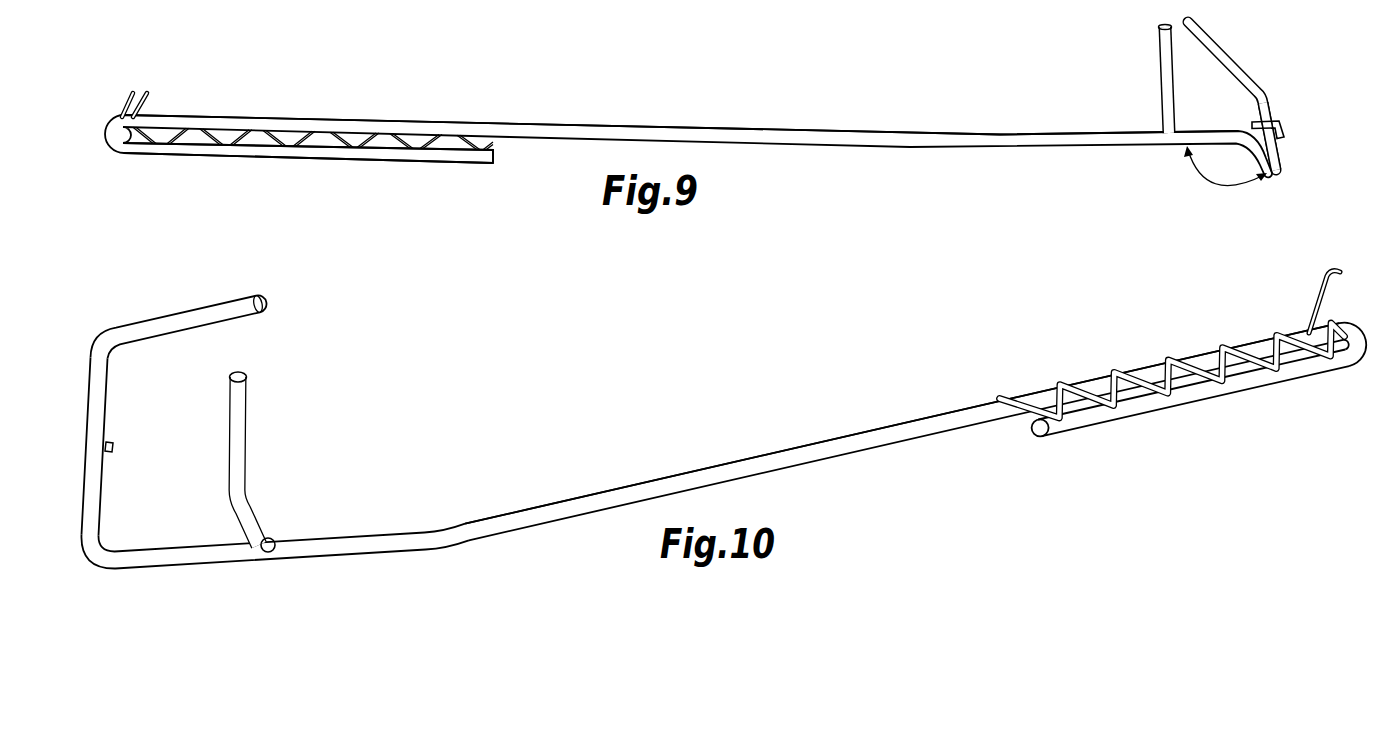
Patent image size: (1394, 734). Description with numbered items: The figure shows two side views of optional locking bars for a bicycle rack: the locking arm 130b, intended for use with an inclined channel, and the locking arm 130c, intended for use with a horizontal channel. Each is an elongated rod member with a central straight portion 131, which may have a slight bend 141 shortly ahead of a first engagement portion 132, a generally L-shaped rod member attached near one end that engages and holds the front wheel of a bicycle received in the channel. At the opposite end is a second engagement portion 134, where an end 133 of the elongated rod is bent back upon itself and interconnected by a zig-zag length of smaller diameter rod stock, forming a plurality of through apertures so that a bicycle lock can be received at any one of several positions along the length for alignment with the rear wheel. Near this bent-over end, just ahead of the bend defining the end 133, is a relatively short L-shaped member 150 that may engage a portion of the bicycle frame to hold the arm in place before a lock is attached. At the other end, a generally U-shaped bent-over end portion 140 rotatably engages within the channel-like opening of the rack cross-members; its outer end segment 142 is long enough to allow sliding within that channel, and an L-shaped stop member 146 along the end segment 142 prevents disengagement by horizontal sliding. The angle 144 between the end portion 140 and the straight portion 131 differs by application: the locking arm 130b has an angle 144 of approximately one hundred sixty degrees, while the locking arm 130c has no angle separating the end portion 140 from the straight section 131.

In FIG. 9, the locking arm 130b is at (762, 122).
In FIG. 10, the locking arm 130c is at (778, 448).
In FIG. 9, the central straight portion 131 is at (562, 130).
In FIG. 10, the central straight portion 131 is at (495, 523).
In FIG. 9, the first engagement portion 132 is at (1158, 53).
In FIG. 10, the first engagement portion 132 is at (241, 410).
In FIG. 9, the end of the elongated rod member 133 is at (423, 163).
In FIG. 10, the end of the elongated rod member 133 is at (1192, 393).
In FIG. 9, the second engagement portion 134 is at (335, 145).
In FIG. 10, the second engagement portion 134 is at (1277, 333).
In FIG. 9, the U-shaped bent-over end portion 140 is at (1262, 90).
In FIG. 10, the U-shaped bent-over end portion 140 is at (93, 333).
In FIG. 10, the slight bend 141 is at (432, 552).
In FIG. 9, the outer end segment 142 is at (1284, 142).
In FIG. 10, the outer end segment 142 is at (92, 393).
In FIG. 9, the angle 144 is at (1213, 184).
In FIG. 9, the L-shaped stop member 146 is at (1282, 124).
In FIG. 10, the L-shaped stop member 146 is at (113, 447).
In FIG. 9, the L-shaped member 150 is at (133, 90).
In FIG. 10, the L-shaped member 150 is at (1323, 275).